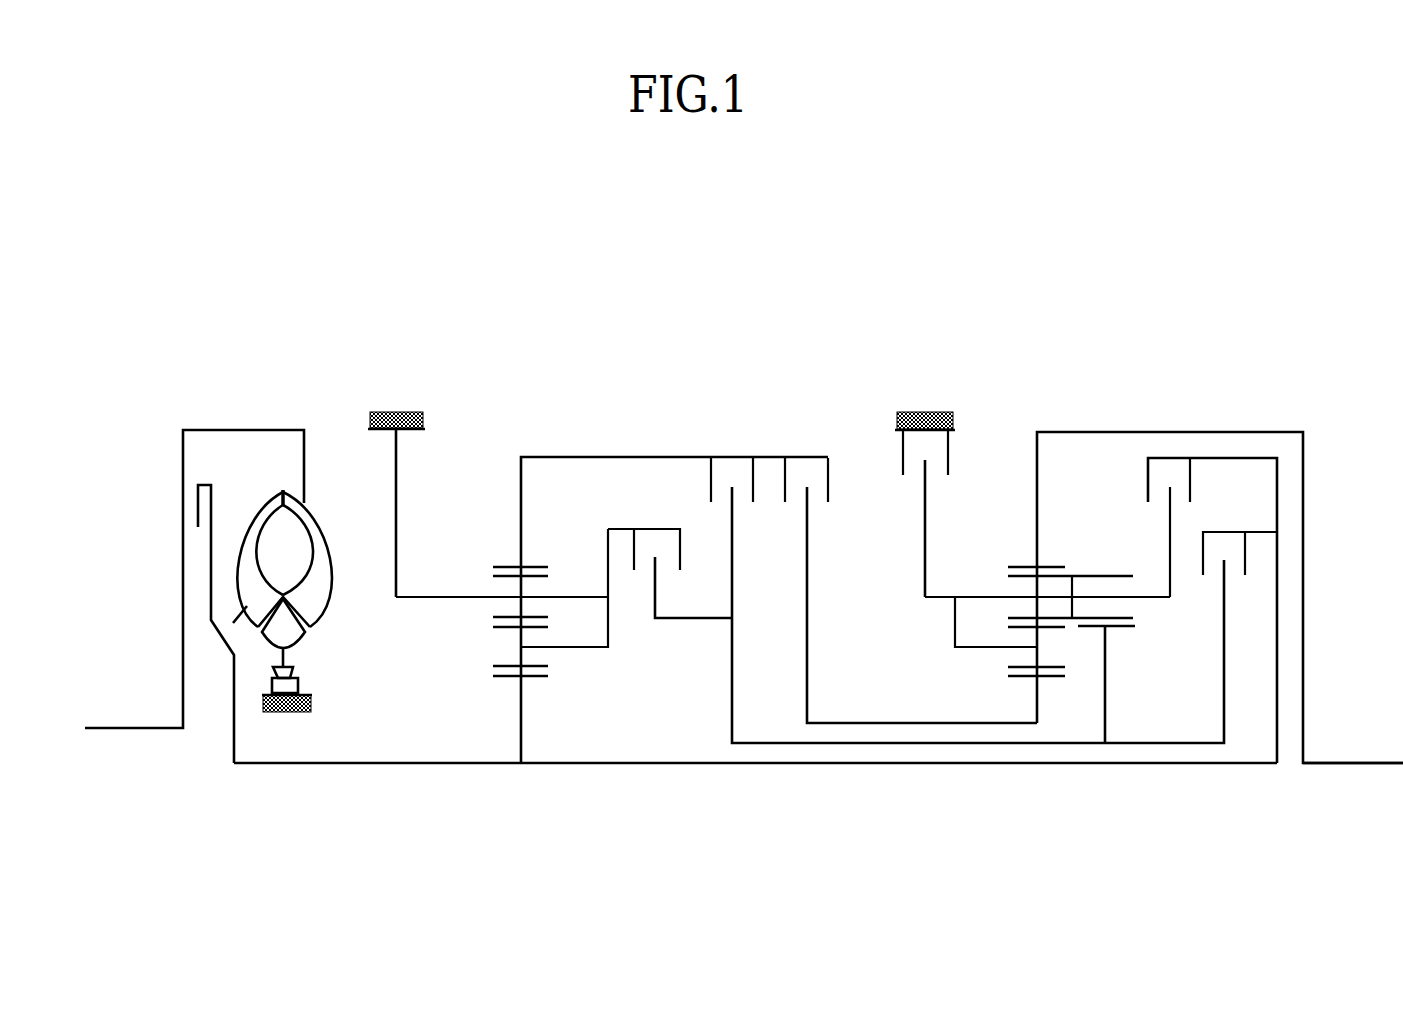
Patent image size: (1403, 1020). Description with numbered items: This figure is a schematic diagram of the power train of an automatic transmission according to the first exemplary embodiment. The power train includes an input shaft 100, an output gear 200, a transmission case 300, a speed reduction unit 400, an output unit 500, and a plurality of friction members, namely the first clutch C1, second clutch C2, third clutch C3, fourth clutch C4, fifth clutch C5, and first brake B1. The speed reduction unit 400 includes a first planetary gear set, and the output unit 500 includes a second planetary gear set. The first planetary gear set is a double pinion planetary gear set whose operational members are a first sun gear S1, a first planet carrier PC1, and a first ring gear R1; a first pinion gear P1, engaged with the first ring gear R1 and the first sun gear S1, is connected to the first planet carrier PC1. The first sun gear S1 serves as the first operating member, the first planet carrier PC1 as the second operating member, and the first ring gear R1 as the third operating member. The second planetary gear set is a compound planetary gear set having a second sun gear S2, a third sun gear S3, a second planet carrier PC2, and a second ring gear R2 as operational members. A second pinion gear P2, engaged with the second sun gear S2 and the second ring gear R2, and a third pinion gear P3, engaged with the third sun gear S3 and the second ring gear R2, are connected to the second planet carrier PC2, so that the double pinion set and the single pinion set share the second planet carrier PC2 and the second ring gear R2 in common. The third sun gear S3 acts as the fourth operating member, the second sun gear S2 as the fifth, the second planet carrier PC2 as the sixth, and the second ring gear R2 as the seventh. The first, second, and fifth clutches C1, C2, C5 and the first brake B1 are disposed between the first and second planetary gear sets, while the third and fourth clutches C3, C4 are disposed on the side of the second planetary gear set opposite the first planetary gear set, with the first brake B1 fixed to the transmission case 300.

The input shaft 100 is at (353, 765).
The output gear 200 is at (1328, 766).
The transmission case 300 is at (408, 410).
The speed reduction unit 400 is at (612, 638).
The output unit 500 is at (1164, 626).
The first planet carrier PC1 is at (502, 580).
The first ring gear R1 is at (517, 556).
The first pinion gear P1 is at (547, 595).
The first sun gear S1 is at (543, 711).
The second planet carrier PC2 is at (1047, 608).
The second ring gear R2 is at (1066, 556).
The second pinion gear P2 is at (1040, 644).
The third pinion gear P3 is at (1070, 582).
The second sun gear S2 is at (1020, 682).
The third sun gear S3 is at (1110, 684).
The first clutch C1 is at (911, 576).
The second clutch C2 is at (908, 586).
The third clutch C3 is at (1191, 624).
The fourth clutch C4 is at (1196, 610).
The fifth clutch C5 is at (670, 559).
The first brake B1 is at (942, 513).